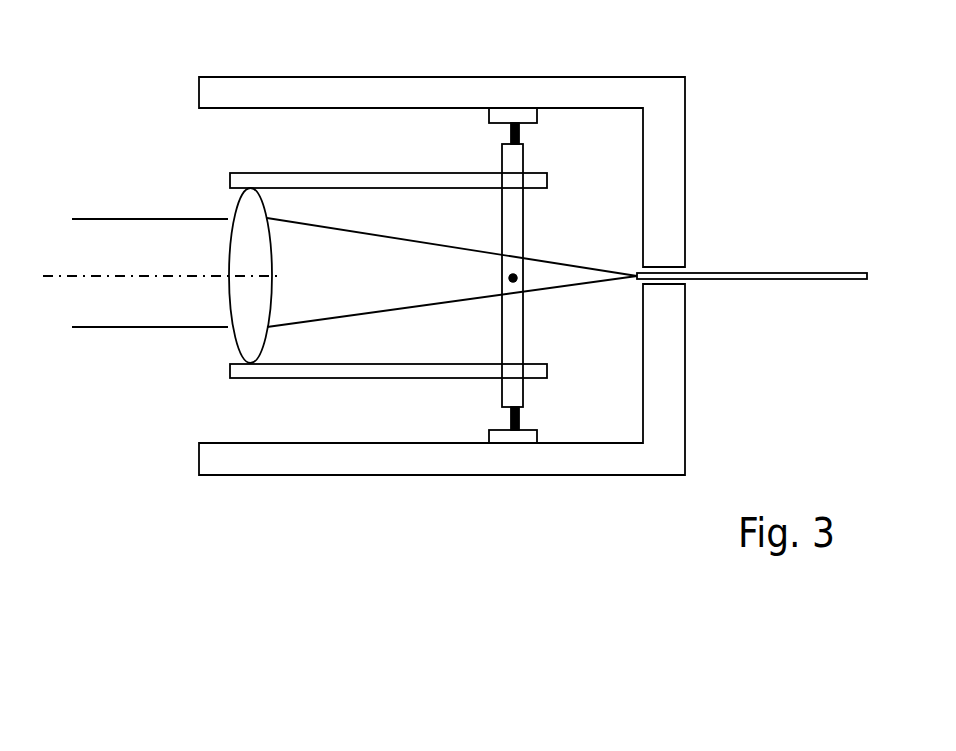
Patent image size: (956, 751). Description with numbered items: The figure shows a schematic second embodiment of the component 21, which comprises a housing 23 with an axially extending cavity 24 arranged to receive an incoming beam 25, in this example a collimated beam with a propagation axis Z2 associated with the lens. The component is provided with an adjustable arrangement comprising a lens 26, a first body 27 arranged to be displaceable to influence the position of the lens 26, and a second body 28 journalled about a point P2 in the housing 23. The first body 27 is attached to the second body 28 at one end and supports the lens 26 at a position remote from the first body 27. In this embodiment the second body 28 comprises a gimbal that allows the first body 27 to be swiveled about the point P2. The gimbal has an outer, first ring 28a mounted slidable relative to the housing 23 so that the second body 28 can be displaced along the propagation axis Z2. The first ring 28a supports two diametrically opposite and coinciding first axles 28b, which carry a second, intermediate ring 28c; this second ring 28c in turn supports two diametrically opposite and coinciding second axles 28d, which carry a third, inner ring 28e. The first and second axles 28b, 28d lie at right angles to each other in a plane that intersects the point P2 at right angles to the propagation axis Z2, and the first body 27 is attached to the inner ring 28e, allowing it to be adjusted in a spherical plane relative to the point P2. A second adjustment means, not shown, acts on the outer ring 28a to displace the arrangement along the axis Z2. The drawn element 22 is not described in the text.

The component 21 is at (442, 278).
The optical fiber 22 is at (752, 256).
The housing 23 is at (494, 276).
The axially extending cavity 24 is at (433, 248).
The incoming beam 25 is at (150, 352).
The lens 26 is at (150, 189).
The first body 27 is at (388, 340).
The second body 28 is at (441, 204).
The first ring 28a is at (484, 62).
The first axles 28b is at (554, 72).
The second ring 28c is at (498, 468).
The second axles 28d is at (571, 405).
The third ring 28e is at (539, 463).
The point P2 is at (641, 312).
The propagation axis Z2 is at (148, 300).